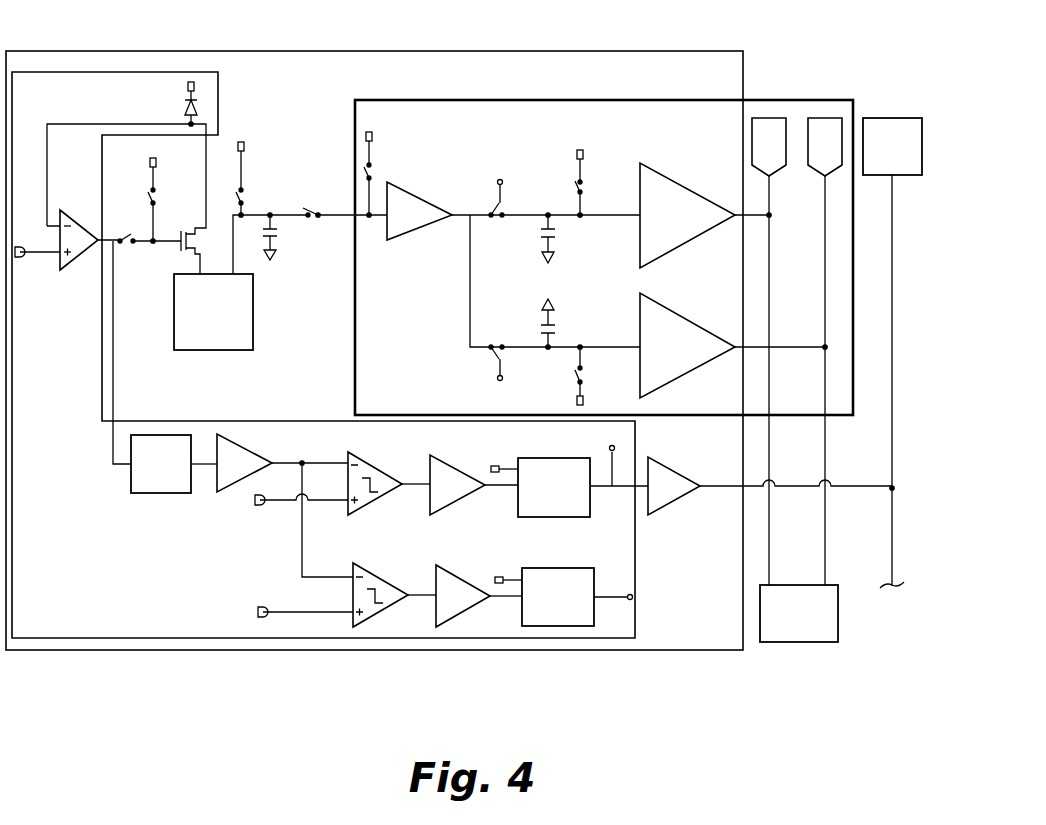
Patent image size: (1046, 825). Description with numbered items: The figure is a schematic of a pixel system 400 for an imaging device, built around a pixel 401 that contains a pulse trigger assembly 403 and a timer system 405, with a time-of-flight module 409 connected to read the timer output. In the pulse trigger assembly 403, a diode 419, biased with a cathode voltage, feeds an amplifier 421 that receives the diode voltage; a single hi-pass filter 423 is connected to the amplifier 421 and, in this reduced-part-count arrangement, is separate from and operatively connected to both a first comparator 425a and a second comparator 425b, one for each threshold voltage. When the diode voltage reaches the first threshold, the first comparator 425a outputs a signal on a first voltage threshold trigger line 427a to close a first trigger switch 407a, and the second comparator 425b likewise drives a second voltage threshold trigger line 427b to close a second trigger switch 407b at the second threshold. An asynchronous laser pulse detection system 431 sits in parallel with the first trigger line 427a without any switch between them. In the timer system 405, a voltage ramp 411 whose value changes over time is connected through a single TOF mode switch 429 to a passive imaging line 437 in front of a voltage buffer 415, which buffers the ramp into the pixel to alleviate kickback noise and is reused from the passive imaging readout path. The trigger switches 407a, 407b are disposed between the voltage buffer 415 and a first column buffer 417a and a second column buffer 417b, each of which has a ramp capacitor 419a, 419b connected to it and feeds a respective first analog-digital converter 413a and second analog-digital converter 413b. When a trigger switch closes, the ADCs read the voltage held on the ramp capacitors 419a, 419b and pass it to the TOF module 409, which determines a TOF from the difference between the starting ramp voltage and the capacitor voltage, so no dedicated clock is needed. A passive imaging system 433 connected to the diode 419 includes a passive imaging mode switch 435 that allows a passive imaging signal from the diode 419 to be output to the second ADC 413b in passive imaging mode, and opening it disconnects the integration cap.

The pixel system 400 is at (80, 25).
The pixel 401 is at (508, 85).
The pulse trigger assembly 403 is at (58, 105).
The timer system 405 is at (638, 262).
The first trigger switch 407a is at (502, 220).
The second trigger switch 407b is at (502, 344).
The time-of-flight module 409 is at (784, 623).
The voltage ramp 411 is at (372, 134).
The first analog-digital converter 413a is at (766, 118).
The second analog-digital converter 413b is at (834, 118).
The voltage buffer 415 is at (404, 238).
The first column buffer 417a is at (684, 252).
The second column buffer 417b is at (684, 314).
The diode 419 is at (184, 106).
The first ramp capacitor 419a is at (558, 240).
The second ramp capacitor 419b is at (558, 326).
The amplifier 421 is at (78, 268).
The hi-pass filter 423 is at (162, 495).
The first comparator 425a is at (394, 500).
The second comparator 425b is at (378, 570).
The first voltage threshold trigger line 427a is at (606, 458).
The second voltage threshold trigger line 427b is at (611, 580).
The TOF mode switch 429 is at (373, 172).
The asynchronous laser pulse detection system 431 is at (689, 519).
The passive imaging system 433 is at (269, 126).
The passive imaging mode switch 435 is at (322, 220).
The passive imaging line 437 is at (334, 208).